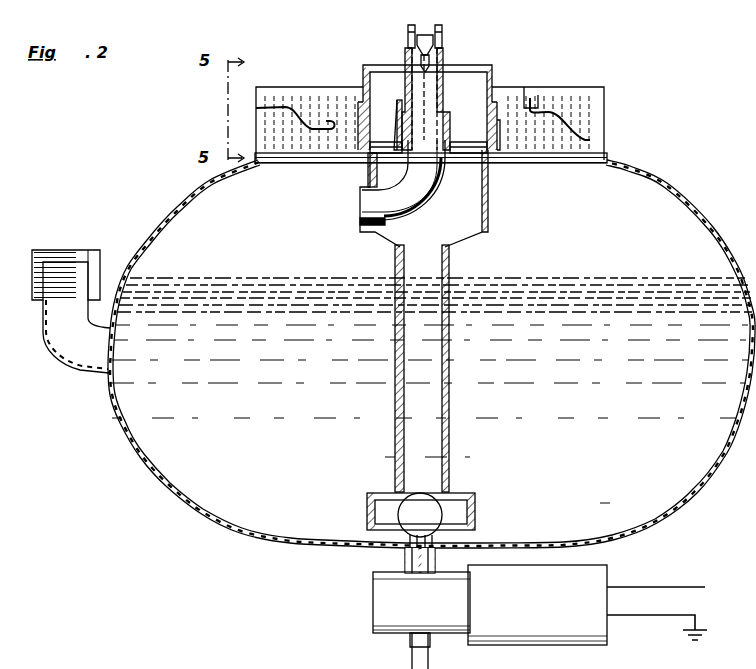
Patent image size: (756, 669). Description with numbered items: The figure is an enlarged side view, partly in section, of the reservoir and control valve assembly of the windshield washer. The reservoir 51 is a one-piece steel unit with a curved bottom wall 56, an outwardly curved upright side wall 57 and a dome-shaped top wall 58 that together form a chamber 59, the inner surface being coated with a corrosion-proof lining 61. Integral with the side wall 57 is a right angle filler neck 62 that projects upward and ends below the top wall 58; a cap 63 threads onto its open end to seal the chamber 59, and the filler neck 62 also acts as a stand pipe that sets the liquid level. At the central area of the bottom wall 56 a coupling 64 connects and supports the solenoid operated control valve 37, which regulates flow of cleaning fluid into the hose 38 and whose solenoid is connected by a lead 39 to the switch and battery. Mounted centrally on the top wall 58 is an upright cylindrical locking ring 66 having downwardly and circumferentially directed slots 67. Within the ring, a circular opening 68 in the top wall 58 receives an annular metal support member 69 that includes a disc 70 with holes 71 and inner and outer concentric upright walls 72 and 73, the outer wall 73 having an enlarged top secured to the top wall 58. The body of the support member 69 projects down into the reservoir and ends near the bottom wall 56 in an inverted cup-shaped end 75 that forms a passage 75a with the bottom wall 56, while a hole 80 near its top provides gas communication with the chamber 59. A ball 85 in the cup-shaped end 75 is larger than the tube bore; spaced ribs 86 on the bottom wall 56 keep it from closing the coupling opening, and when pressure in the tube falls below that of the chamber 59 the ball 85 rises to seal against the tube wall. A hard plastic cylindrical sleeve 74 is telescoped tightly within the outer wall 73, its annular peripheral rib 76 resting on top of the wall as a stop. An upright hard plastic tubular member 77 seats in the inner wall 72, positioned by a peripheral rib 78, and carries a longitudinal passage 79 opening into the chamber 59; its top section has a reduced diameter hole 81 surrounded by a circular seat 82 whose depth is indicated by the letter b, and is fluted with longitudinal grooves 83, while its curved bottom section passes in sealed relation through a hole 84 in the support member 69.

The solenoid operated control valve 37 is at (560, 646).
The hose 38 is at (369, 668).
The lead 39 is at (686, 586).
The reservoir 51 is at (127, 170).
The bottom wall 56 is at (244, 542).
The side wall 57 is at (110, 406).
The top wall 58 is at (530, 164).
The chamber 59 is at (636, 244).
The corrosion-proof lining 61 is at (188, 194).
The filler neck 62 is at (57, 350).
The cap 63 is at (42, 250).
The coupling 64 is at (403, 566).
The locking ring 66 is at (607, 104).
The slots 67 is at (267, 100).
The circular opening 68 is at (368, 165).
The support member 69 is at (496, 223).
The disc 70 is at (447, 165).
The holes 71 is at (380, 151).
The inner annular upright wall 72 is at (399, 134).
The outer annular upright wall 73 is at (500, 132).
The cylindrical sleeve 74 is at (494, 72).
The inverted cup-shaped end 75 is at (477, 499).
The passage 75a is at (463, 540).
The annular peripheral rib 76 is at (363, 103).
The tubular member 77 is at (446, 76).
The peripheral rib 78 is at (401, 118).
The passage 79 is at (433, 105).
The hole 80 is at (450, 259).
The reduced diameter hole 81 is at (420, 64).
The circular seat 82 is at (443, 44).
The longitudinal grooves 83 is at (407, 40).
The hole 84 is at (362, 223).
The ball 85 is at (429, 496).
The ribs 86 is at (398, 540).
The depth of the circular seat b is at (434, 34).